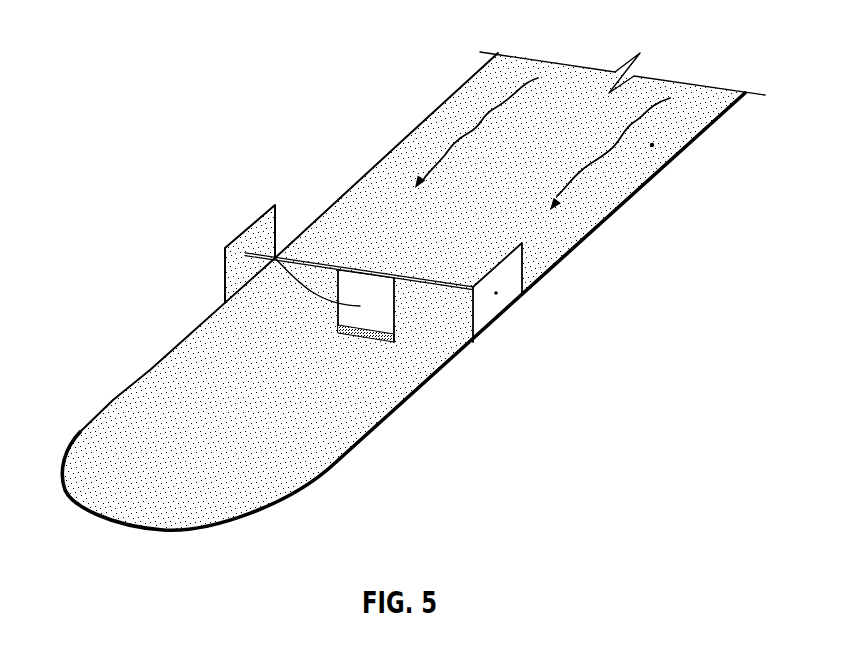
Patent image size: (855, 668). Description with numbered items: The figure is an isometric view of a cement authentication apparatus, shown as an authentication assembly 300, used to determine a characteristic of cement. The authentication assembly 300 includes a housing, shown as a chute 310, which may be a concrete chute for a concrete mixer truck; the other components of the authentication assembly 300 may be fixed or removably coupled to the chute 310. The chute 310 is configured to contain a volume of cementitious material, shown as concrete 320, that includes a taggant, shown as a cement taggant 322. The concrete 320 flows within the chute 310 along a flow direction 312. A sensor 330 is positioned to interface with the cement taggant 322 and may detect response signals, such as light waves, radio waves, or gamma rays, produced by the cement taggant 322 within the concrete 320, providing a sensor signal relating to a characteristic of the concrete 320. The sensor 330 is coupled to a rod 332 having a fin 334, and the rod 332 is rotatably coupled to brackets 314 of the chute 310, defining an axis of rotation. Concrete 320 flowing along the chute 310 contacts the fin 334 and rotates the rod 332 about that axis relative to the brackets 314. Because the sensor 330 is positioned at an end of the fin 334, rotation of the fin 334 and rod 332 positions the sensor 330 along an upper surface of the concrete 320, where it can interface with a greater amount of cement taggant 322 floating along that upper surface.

The authentication assembly 300 is at (205, 46).
The chute 310 is at (447, 367).
The flow direction 312 is at (477, 123).
The brackets 314 is at (242, 274).
The concrete 320 is at (636, 191).
The cement taggant 322 is at (652, 145).
The sensor 330 is at (383, 343).
The rod 332 is at (327, 262).
The fin 334 is at (244, 242).